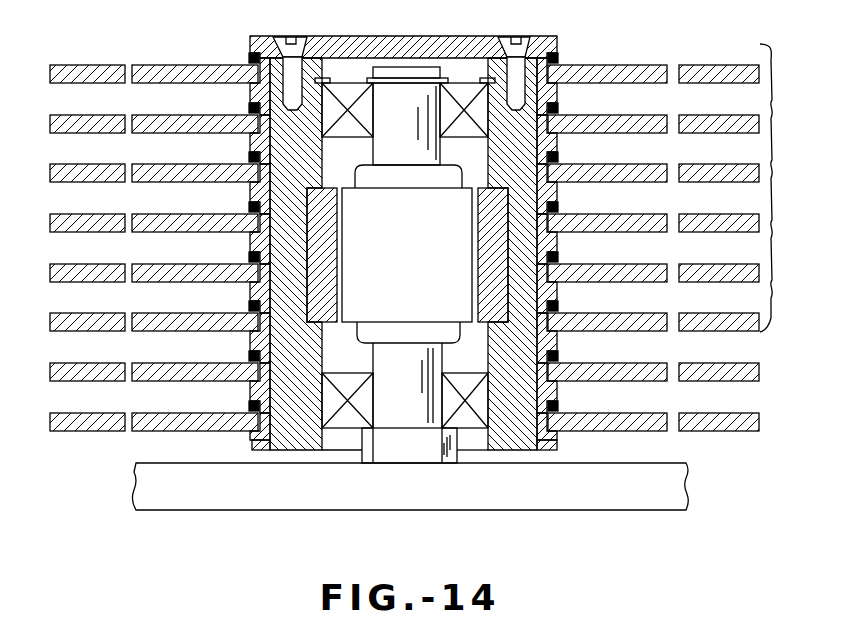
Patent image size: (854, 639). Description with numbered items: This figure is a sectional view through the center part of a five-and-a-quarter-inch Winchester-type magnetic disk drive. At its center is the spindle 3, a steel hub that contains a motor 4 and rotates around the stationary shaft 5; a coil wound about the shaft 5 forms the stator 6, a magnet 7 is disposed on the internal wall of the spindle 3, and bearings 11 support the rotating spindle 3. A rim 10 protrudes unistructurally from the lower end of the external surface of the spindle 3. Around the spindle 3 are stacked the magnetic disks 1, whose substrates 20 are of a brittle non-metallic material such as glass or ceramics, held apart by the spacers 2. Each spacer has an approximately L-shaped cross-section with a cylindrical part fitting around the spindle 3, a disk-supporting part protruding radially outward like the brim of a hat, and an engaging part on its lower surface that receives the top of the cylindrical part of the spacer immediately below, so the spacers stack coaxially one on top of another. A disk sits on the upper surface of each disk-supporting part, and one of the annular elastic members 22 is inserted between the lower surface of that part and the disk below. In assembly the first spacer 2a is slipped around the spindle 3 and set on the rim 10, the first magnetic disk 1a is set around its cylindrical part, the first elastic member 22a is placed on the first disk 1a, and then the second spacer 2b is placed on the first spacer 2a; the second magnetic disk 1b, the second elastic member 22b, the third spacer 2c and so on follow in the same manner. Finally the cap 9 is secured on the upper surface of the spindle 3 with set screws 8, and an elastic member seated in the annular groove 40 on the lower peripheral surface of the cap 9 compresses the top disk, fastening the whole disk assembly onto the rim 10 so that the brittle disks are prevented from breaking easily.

The magnetic disks 1 is at (411, 231).
The first magnetic disk 1a is at (750, 418).
The second magnetic disk 1b is at (752, 374).
The spacers 2 is at (557, 245).
The first spacer 2a is at (560, 440).
The second spacer 2b is at (562, 388).
The third spacer 2c is at (560, 342).
The spindle 3 is at (318, 452).
The motor 4 is at (348, 142).
The shaft 5 is at (430, 443).
The stator 6 is at (423, 422).
The magnet 7 is at (322, 262).
The set screws 8 is at (287, 50).
The cap 9 is at (400, 42).
The rim 10 is at (243, 455).
The bearings 11 is at (462, 90).
The substrates 20 is at (720, 66).
The annular elastic members 22 is at (249, 406).
The first elastic member 22a is at (560, 408).
The second elastic member 22b is at (560, 357).
The annular groove 40 is at (560, 56).